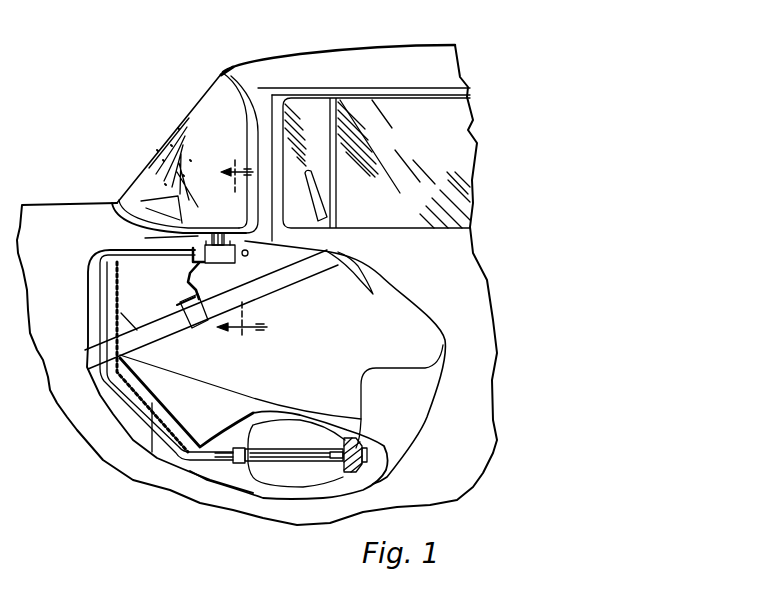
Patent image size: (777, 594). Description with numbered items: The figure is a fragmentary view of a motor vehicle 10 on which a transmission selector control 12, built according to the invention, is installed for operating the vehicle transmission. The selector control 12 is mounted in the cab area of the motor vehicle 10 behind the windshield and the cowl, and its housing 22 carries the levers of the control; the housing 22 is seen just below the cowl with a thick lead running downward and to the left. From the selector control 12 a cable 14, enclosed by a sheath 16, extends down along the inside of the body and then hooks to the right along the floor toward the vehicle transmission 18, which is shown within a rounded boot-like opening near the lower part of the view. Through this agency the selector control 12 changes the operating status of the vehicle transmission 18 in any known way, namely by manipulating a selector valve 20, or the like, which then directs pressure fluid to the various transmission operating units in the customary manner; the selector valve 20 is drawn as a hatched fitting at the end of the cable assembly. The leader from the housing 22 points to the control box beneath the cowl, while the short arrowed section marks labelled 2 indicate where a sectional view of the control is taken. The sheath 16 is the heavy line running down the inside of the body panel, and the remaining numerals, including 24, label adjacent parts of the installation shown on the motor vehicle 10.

The motor vehicle 10 is at (395, 44).
The transmission selector control 12 is at (232, 271).
The cable 14 is at (277, 451).
The sheath 16 is at (176, 430).
The vehicle transmission 18 is at (310, 492).
The selector valve 20 is at (371, 452).
The housing 22 is at (245, 249).
The control cable 24 is at (190, 287).
The section line 2- 2 is at (229, 263).